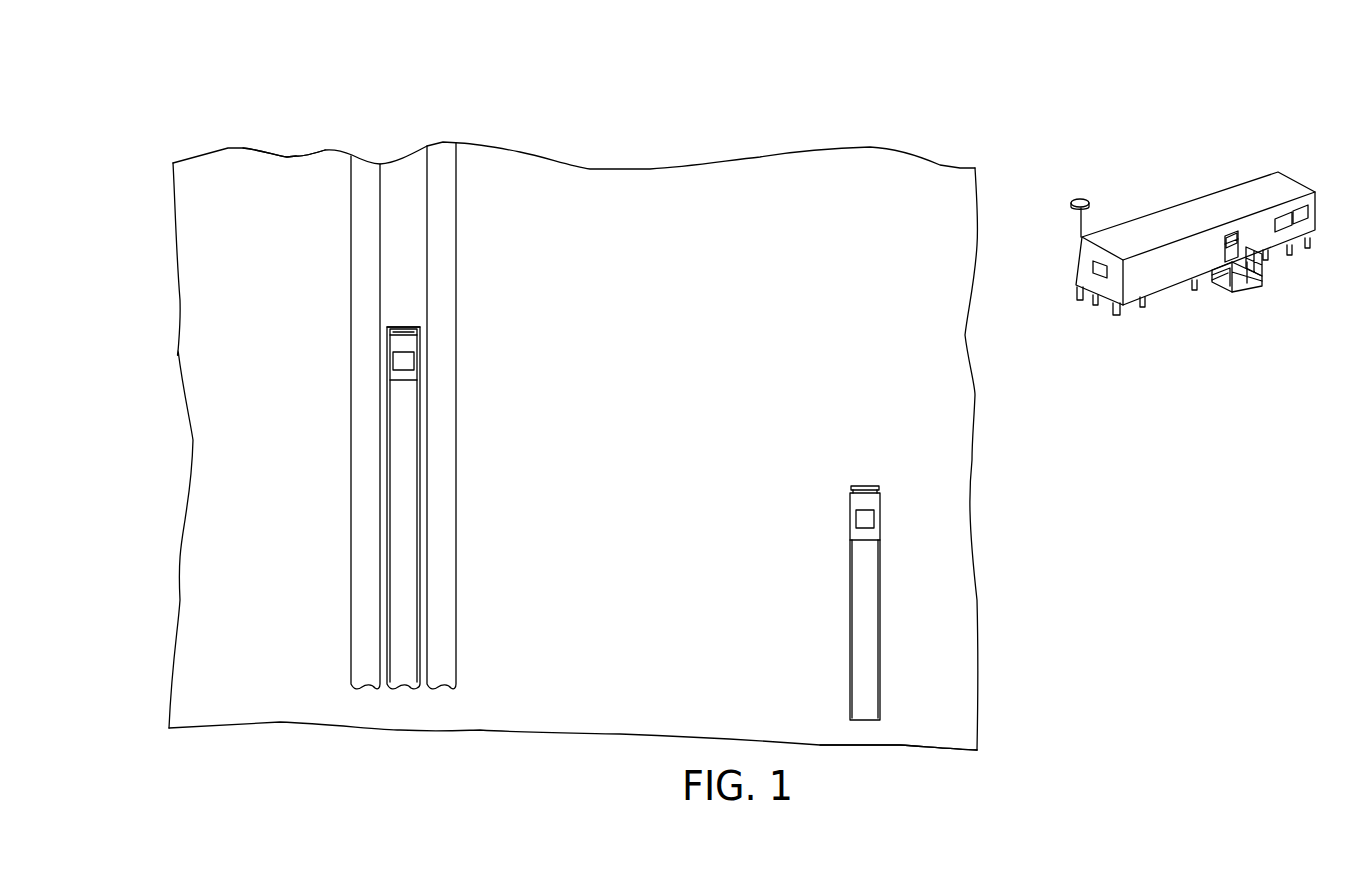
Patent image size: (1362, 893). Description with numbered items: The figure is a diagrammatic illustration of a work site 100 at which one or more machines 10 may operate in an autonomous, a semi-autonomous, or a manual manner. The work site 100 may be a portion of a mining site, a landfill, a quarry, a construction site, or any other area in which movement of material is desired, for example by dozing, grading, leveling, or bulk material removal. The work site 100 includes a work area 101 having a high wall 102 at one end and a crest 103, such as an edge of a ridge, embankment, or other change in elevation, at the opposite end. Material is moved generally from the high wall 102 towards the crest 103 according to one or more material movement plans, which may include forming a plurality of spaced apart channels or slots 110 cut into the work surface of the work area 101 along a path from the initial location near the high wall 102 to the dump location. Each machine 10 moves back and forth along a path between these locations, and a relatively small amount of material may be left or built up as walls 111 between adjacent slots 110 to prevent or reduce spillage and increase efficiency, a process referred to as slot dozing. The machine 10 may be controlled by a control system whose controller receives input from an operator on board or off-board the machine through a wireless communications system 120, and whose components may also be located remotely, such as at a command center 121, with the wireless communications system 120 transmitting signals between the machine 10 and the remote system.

The work site 100 is at (217, 129).
The work area 101 is at (228, 298).
The high wall 102 is at (902, 745).
The crest 103 is at (296, 156).
The slots 110 is at (403, 507).
The walls 111 is at (385, 428).
The machine 10 is at (400, 373).
The wireless communications system 120 is at (1090, 202).
The command center 121 is at (1203, 220).